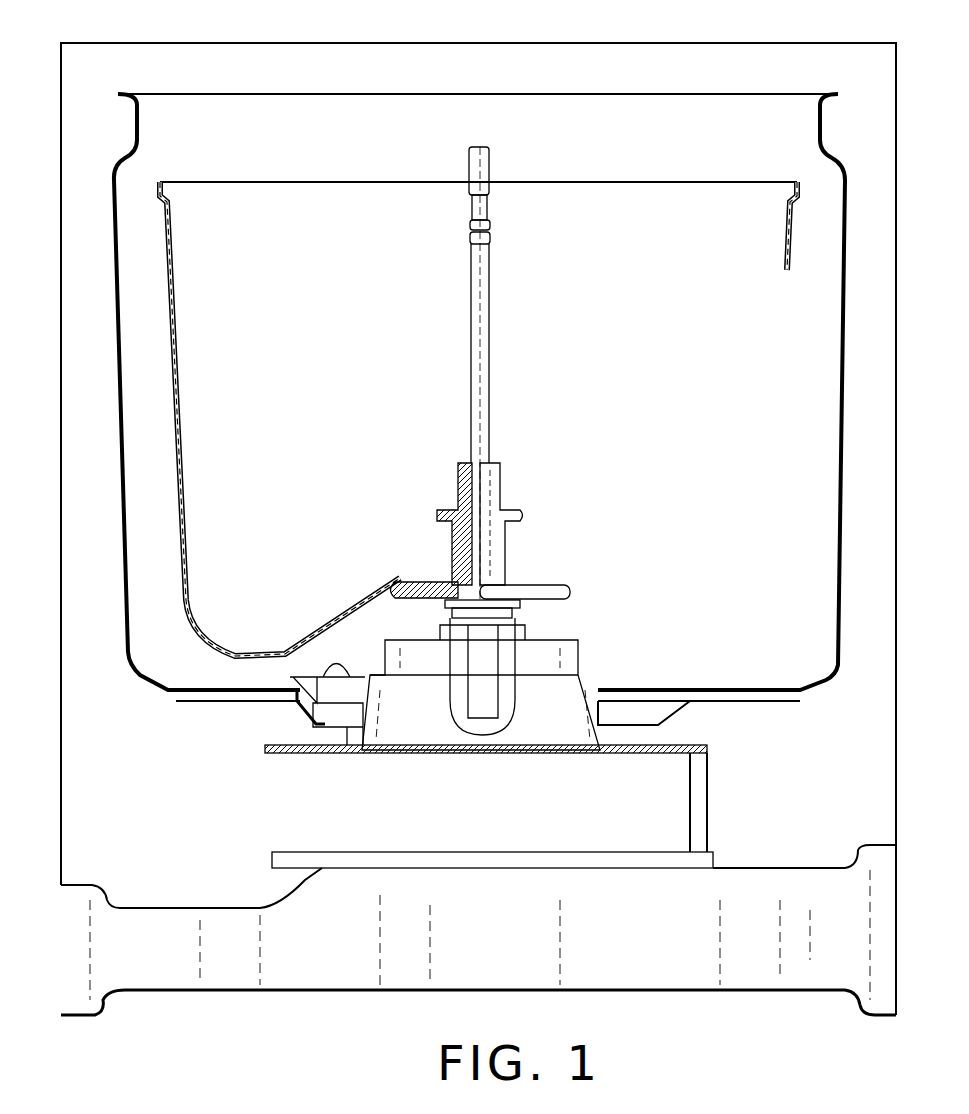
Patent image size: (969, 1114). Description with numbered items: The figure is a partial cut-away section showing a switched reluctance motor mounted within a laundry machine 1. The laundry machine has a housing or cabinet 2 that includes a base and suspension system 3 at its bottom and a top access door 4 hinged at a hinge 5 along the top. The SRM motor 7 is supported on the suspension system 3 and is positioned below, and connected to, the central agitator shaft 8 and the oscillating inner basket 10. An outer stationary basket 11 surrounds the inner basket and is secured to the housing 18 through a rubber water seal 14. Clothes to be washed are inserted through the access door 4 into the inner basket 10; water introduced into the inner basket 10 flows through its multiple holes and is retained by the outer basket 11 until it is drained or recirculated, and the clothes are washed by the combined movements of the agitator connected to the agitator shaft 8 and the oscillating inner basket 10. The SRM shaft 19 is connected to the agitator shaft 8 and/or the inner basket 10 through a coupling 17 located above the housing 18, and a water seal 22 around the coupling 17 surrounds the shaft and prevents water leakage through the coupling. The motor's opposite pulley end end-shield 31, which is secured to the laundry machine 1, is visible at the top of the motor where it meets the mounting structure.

The laundry machine 1 is at (697, 376).
The housing or cabinet 2 is at (61, 778).
The base and suspension system 3 is at (773, 882).
The top access door 4 is at (522, 44).
The hinge 5 is at (282, 45).
The SRM motor 7 is at (652, 800).
The central agitator shaft 8 is at (492, 312).
The oscillating inner basket 10 is at (183, 458).
The outer stationary basket 11 is at (121, 527).
The rubber water seal 14 is at (283, 708).
The coupling 17 is at (503, 548).
The housing 18 is at (560, 640).
The SRM shaft 19 is at (487, 688).
The water seal 22 is at (455, 603).
The opposite pulley end end-shield 31 is at (670, 742).